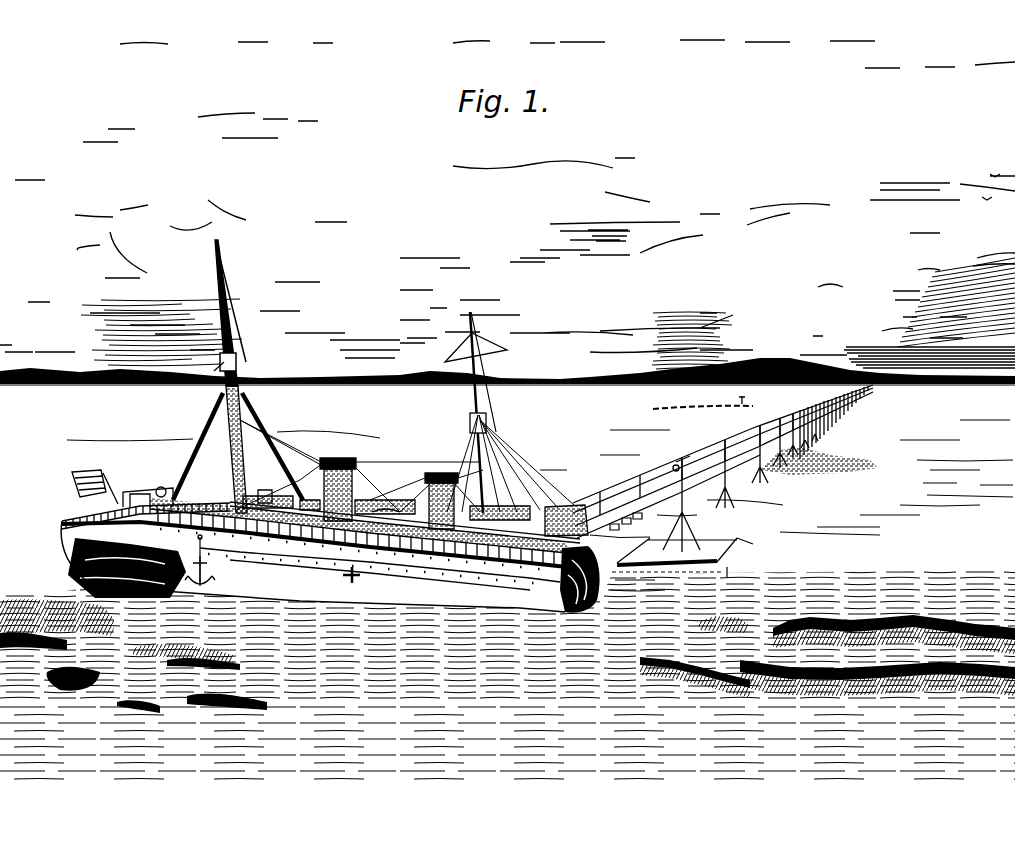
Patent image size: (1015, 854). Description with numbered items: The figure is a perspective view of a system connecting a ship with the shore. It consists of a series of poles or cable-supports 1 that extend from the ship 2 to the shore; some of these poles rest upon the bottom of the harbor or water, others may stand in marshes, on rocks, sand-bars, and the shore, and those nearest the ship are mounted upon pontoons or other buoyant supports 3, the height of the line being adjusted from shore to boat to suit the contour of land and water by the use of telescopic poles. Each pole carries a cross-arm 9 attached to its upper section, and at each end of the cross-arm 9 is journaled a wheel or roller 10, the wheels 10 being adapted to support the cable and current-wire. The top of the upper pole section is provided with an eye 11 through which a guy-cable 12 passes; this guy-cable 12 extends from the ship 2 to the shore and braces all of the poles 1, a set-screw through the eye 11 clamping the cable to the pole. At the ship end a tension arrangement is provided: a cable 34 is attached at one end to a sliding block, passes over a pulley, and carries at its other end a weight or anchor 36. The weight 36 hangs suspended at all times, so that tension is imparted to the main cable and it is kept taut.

The poles or cable-supports 1 is at (793, 485).
The ship 2 is at (574, 508).
The pontoons or other buoyant supports 3 is at (737, 542).
The cross-arm 9 is at (673, 465).
The wheel or roller 10 is at (684, 499).
The eye 11 is at (683, 459).
The guy-cable 12 is at (638, 478).
The cable 34 is at (198, 549).
The weight or anchor 36 is at (208, 581).